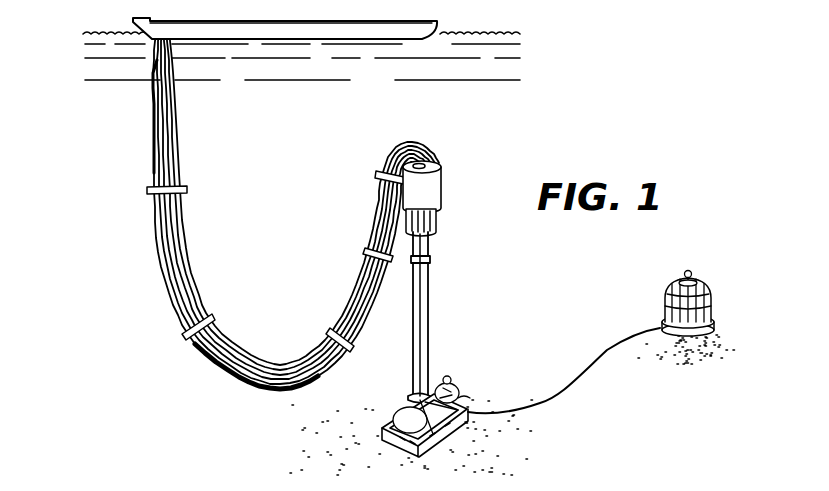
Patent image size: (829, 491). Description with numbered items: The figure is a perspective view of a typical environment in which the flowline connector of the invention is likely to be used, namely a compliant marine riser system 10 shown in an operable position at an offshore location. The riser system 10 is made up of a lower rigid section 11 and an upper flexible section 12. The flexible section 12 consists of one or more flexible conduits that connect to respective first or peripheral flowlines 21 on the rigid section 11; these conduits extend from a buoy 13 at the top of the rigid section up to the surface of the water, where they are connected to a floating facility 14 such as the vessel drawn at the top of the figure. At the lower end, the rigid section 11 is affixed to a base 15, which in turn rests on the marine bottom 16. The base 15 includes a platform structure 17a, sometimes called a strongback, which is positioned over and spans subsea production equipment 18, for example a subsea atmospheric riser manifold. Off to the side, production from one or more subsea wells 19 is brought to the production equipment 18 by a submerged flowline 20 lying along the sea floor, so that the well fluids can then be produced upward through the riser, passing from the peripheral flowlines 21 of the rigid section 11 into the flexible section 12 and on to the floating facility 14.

The compliant marine riser system 10 is at (452, 170).
The lower rigid section 11 is at (439, 290).
The upper flexible section 12 is at (190, 255).
The buoy 13 is at (432, 206).
The floating facility 14 is at (324, 24).
The base 15 is at (469, 375).
The marine bottom 16 is at (320, 447).
The platform structure 17a is at (469, 393).
The subsea production equipment 18 is at (383, 443).
The subsea well 19 is at (713, 300).
The submerged flowline 20 is at (575, 387).
The peripheral flowline 21 is at (414, 362).